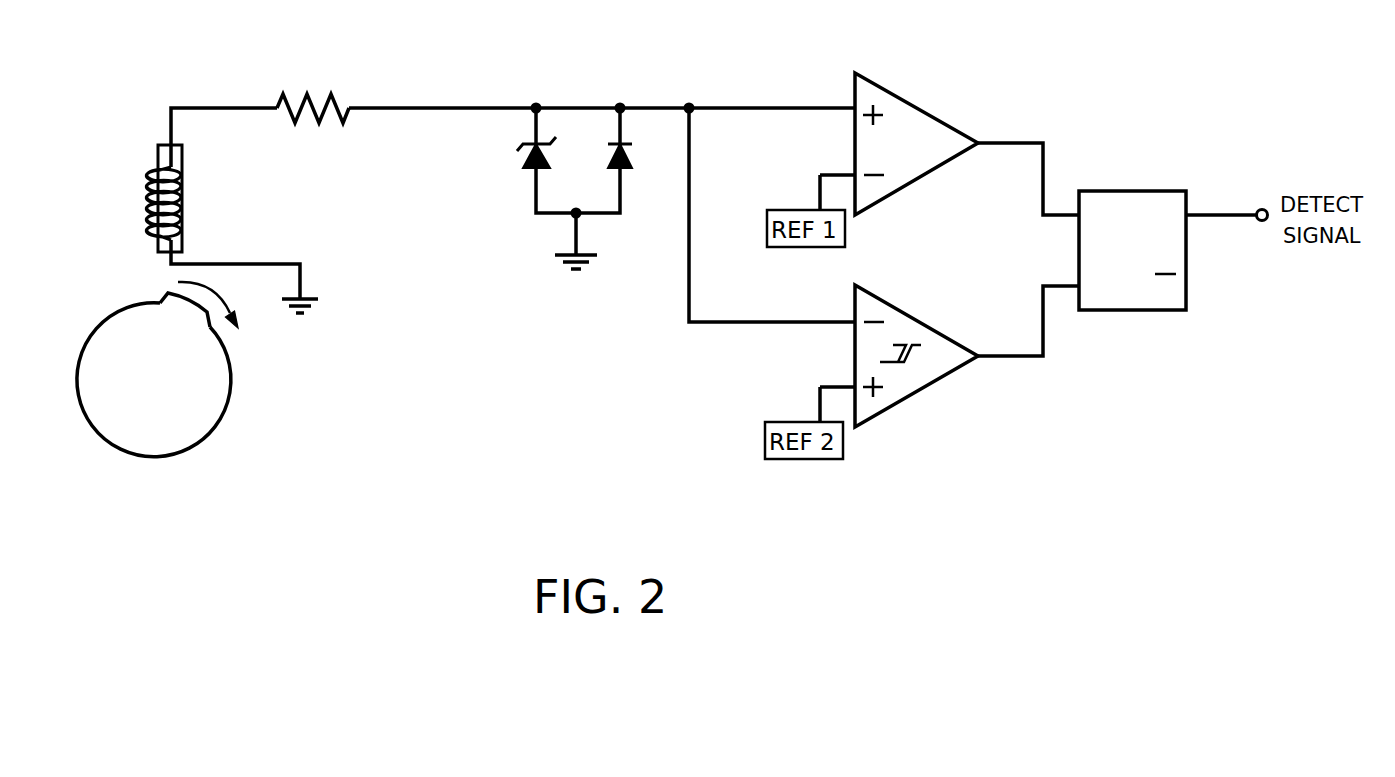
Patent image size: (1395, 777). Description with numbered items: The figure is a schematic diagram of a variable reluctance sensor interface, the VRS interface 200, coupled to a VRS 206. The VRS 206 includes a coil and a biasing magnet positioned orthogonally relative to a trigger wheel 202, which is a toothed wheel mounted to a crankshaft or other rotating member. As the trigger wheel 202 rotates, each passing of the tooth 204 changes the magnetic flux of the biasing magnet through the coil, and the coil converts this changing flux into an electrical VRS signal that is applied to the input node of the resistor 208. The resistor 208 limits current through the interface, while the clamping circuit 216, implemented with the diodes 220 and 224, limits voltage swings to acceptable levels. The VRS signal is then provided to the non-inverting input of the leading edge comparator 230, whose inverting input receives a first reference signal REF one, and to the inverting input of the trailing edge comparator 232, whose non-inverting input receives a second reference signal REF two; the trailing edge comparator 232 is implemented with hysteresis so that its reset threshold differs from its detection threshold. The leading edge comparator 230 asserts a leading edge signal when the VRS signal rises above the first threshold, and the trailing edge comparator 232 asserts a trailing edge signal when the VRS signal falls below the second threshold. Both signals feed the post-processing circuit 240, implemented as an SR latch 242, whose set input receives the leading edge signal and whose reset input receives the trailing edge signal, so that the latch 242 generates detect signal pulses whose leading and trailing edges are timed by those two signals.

The VRS interface 200 is at (627, 509).
The trigger wheel 202 is at (232, 385).
The tooth 204 is at (165, 303).
The VRS 206 is at (155, 172).
The resistor 208 is at (313, 90).
The clamping circuit 216 is at (590, 52).
The diode 220 is at (523, 166).
The diode 224 is at (628, 168).
The leading edge comparator 230 is at (899, 98).
The trailing edge comparator 232 is at (893, 307).
The post-processing circuit 240 is at (1112, 143).
The SR latch 242 is at (1130, 191).